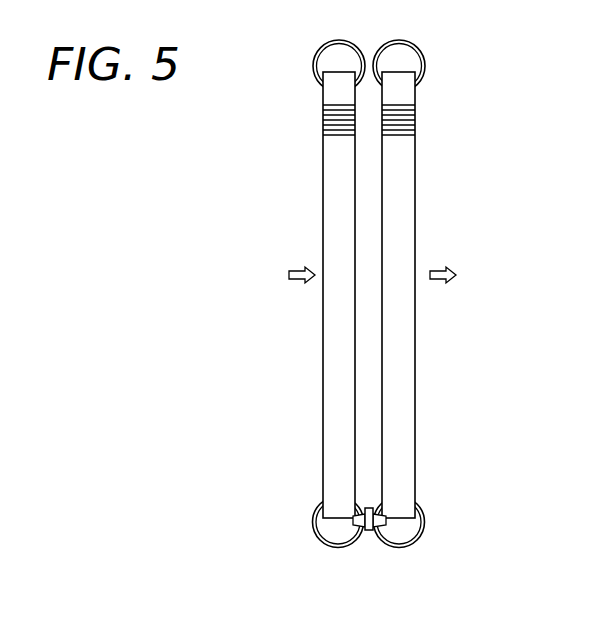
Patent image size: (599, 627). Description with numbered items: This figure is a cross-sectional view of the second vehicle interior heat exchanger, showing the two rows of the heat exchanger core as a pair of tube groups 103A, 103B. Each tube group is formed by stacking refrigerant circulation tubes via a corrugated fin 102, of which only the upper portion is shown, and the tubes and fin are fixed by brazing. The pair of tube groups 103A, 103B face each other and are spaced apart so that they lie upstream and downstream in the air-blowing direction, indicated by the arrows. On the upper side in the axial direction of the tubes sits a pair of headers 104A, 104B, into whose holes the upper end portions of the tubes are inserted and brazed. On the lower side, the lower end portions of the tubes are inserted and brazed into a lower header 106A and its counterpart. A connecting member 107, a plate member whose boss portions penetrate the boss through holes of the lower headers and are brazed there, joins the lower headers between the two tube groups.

The corrugated fin 102 is at (415, 124).
The tube group 103A is at (415, 221).
The tube group 103B is at (323, 222).
The header 104A is at (424, 58).
The header 104B is at (314, 58).
The header 106A is at (314, 519).
The connecting member 107 is at (372, 531).